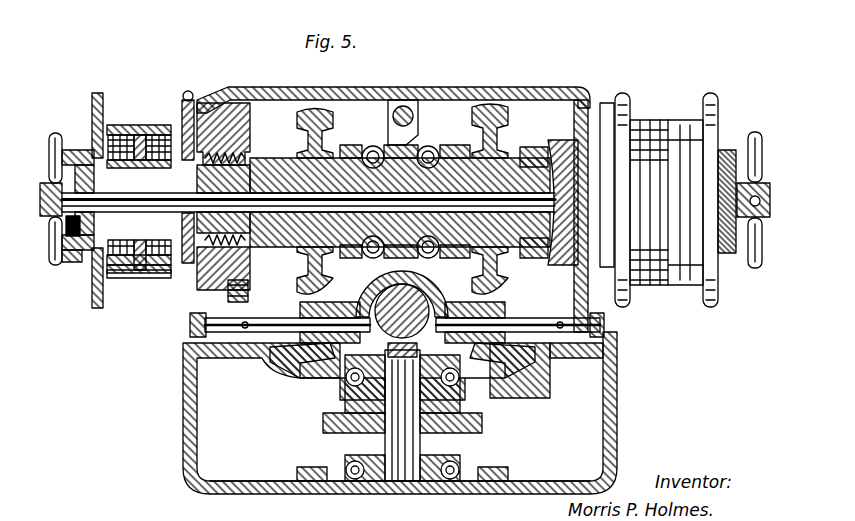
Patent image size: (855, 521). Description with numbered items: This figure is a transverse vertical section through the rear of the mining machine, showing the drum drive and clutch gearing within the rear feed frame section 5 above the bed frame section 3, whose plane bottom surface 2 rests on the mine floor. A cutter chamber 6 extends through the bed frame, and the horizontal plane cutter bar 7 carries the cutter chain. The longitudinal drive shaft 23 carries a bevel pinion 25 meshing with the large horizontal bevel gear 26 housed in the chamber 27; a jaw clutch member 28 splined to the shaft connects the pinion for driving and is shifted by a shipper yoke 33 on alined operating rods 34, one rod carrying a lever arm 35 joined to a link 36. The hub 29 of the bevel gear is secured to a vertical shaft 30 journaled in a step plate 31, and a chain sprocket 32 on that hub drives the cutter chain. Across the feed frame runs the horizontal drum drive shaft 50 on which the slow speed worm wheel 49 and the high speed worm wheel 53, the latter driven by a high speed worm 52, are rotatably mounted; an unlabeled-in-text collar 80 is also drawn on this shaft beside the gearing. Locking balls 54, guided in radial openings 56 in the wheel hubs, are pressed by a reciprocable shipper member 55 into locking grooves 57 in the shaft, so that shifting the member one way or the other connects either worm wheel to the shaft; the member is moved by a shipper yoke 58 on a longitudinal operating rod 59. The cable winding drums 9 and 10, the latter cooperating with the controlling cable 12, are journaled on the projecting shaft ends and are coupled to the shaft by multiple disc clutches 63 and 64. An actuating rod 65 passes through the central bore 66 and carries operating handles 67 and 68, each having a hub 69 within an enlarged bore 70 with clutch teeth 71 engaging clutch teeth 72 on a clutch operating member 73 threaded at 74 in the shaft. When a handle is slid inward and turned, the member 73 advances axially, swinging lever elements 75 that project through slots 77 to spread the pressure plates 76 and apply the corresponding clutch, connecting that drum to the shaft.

The plane bottom surface 2 is at (275, 494).
The bed frame section 3 is at (185, 442).
The rear feed frame section 5 is at (582, 98).
The cutter chamber 6 is at (612, 426).
The cutter bar 7 is at (362, 90).
The cable winding drum 9 is at (134, 125).
The cable winding drum 10 is at (668, 124).
The controlling cable 12 is at (645, 120).
The drive shaft 23 is at (352, 305).
The bevel pinion 25 is at (334, 272).
The bevel gear 26 is at (315, 372).
The chamber 27 is at (485, 372).
The jaw clutch member 28 is at (430, 283).
The hub 29 is at (470, 424).
The vertical shaft 30 is at (400, 494).
The step plate 31 is at (468, 470).
The chain sprocket 32 is at (325, 425).
The shipper yoke 33 is at (446, 309).
The operating rods 34 is at (310, 318).
The lever arm 35 is at (245, 316).
The link 36 is at (248, 282).
The slow speed worm wheel 49 is at (312, 108).
The drum drive shaft 50 is at (263, 160).
The high speed worm 52 is at (430, 149).
The high speed worm wheel 53 is at (500, 106).
The balls 54 is at (373, 150).
The shipper member 55 is at (388, 146).
The radial openings 56 is at (447, 145).
The locking grooves 57 is at (357, 147).
The shipper yoke 58 is at (418, 128).
The operating rod 59 is at (402, 105).
The multiple disc clutch 63 is at (150, 136).
The multiple disc clutch 64 is at (726, 150).
The actuating rod 65 is at (168, 268).
The central bore 66 is at (233, 152).
The operating handle 67 is at (50, 160).
The operating handle 68 is at (764, 186).
The hub 69 is at (50, 234).
The enlarged bore 70 is at (84, 152).
The clutch teeth 71 is at (70, 254).
The clutch teeth 72 is at (86, 262).
The clutch operating member 73 is at (120, 268).
The threads 74 is at (98, 128).
The lever elements 75 is at (140, 272).
The pressure plate 76 is at (121, 124).
The slots 77 is at (126, 120).
The collar 80 is at (534, 147).